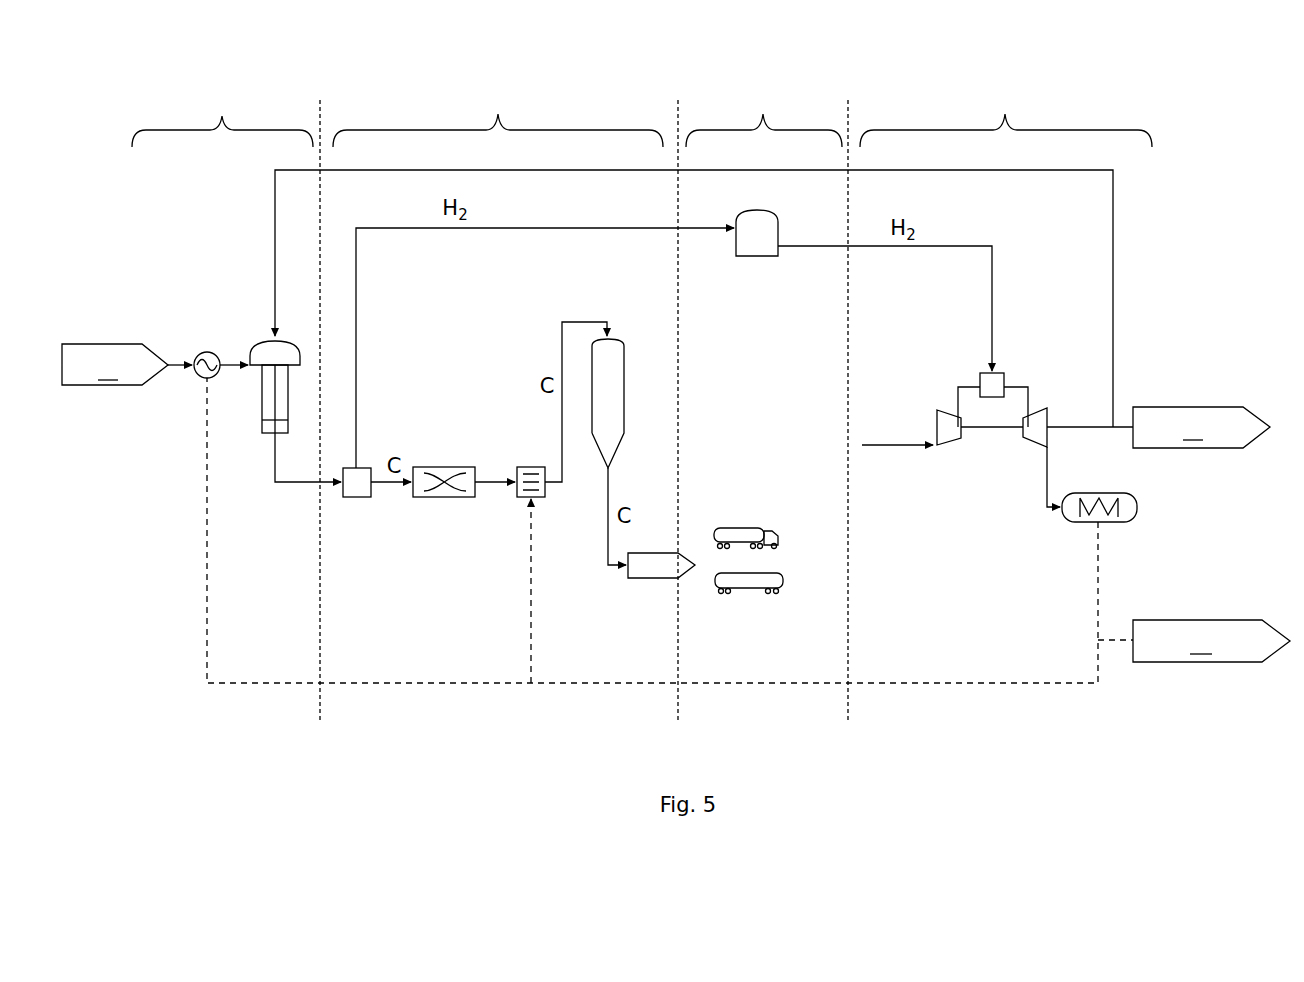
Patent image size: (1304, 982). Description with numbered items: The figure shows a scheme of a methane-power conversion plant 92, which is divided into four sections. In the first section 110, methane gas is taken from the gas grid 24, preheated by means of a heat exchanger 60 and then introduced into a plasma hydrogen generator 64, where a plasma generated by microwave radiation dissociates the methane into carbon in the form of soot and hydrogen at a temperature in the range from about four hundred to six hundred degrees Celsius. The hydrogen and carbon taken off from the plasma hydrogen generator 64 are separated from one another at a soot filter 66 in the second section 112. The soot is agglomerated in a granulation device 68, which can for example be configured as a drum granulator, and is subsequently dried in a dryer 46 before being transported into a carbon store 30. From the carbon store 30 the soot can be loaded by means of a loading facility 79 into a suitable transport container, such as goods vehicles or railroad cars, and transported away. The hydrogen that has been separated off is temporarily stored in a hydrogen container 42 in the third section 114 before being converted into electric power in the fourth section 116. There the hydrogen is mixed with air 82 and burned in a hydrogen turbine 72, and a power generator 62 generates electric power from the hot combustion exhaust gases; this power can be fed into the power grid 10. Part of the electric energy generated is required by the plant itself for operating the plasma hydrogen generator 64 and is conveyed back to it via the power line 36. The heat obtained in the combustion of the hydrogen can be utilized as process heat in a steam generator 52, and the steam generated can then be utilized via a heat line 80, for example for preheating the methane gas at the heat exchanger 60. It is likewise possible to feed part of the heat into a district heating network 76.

The methane-power conversion plant 92 is at (90, 134).
The first section 110 is at (222, 116).
The second section 112 is at (498, 116).
The third section 114 is at (764, 116).
The fourth section 116 is at (1006, 116).
The gas grid 24 is at (115, 364).
The heat exchanger 60 is at (200, 378).
The plasma hydrogen generator 64 is at (258, 345).
The soot filter 66 is at (357, 498).
The granulation device 68 is at (442, 498).
The dryer 46 is at (528, 465).
The carbon store 30 is at (624, 375).
The hydrogen container 42 is at (752, 256).
The power line 36 is at (1113, 262).
The loading facility 79 is at (780, 543).
The air 82 is at (898, 440).
The power generator 62 is at (1048, 410).
The hydrogen turbine 72 is at (995, 370).
The power grid 10 is at (1201, 427).
The steam generator 52 is at (1140, 500).
The heat line 80 is at (955, 683).
The district heating network 76 is at (1211, 641).